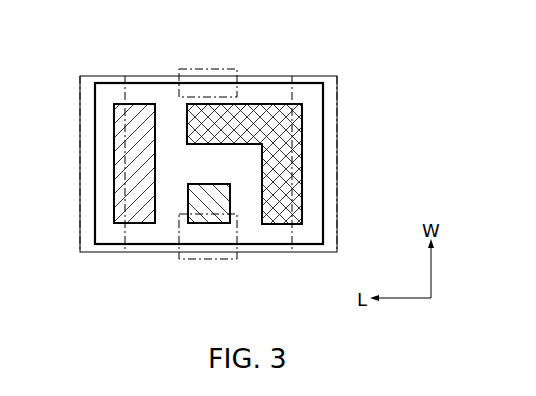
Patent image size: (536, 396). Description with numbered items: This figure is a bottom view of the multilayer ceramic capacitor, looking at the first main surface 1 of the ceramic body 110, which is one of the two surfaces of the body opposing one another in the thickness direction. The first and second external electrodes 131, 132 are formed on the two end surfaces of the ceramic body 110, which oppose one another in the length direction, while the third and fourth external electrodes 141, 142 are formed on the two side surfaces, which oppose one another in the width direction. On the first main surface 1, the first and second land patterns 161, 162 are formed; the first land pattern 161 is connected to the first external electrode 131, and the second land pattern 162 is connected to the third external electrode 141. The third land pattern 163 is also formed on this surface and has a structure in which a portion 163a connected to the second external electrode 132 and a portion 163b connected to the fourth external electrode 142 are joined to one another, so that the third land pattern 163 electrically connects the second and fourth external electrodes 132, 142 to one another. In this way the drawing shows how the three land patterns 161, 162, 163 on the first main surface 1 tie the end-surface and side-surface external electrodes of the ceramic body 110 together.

The first main surface 1 is at (269, 245).
The ceramic body 110 is at (323, 163).
The first external electrode 131 is at (99, 76).
The second external electrode 132 is at (317, 76).
The third external electrode 141 is at (188, 259).
The fourth external electrode 142 is at (190, 68).
The first land pattern 161 is at (127, 108).
The second land pattern 162 is at (208, 220).
The third land pattern 163 is at (247, 116).
The portion connected to the second external electrode 163a is at (285, 210).
The portion connected to the fourth external electrode 163b is at (205, 112).